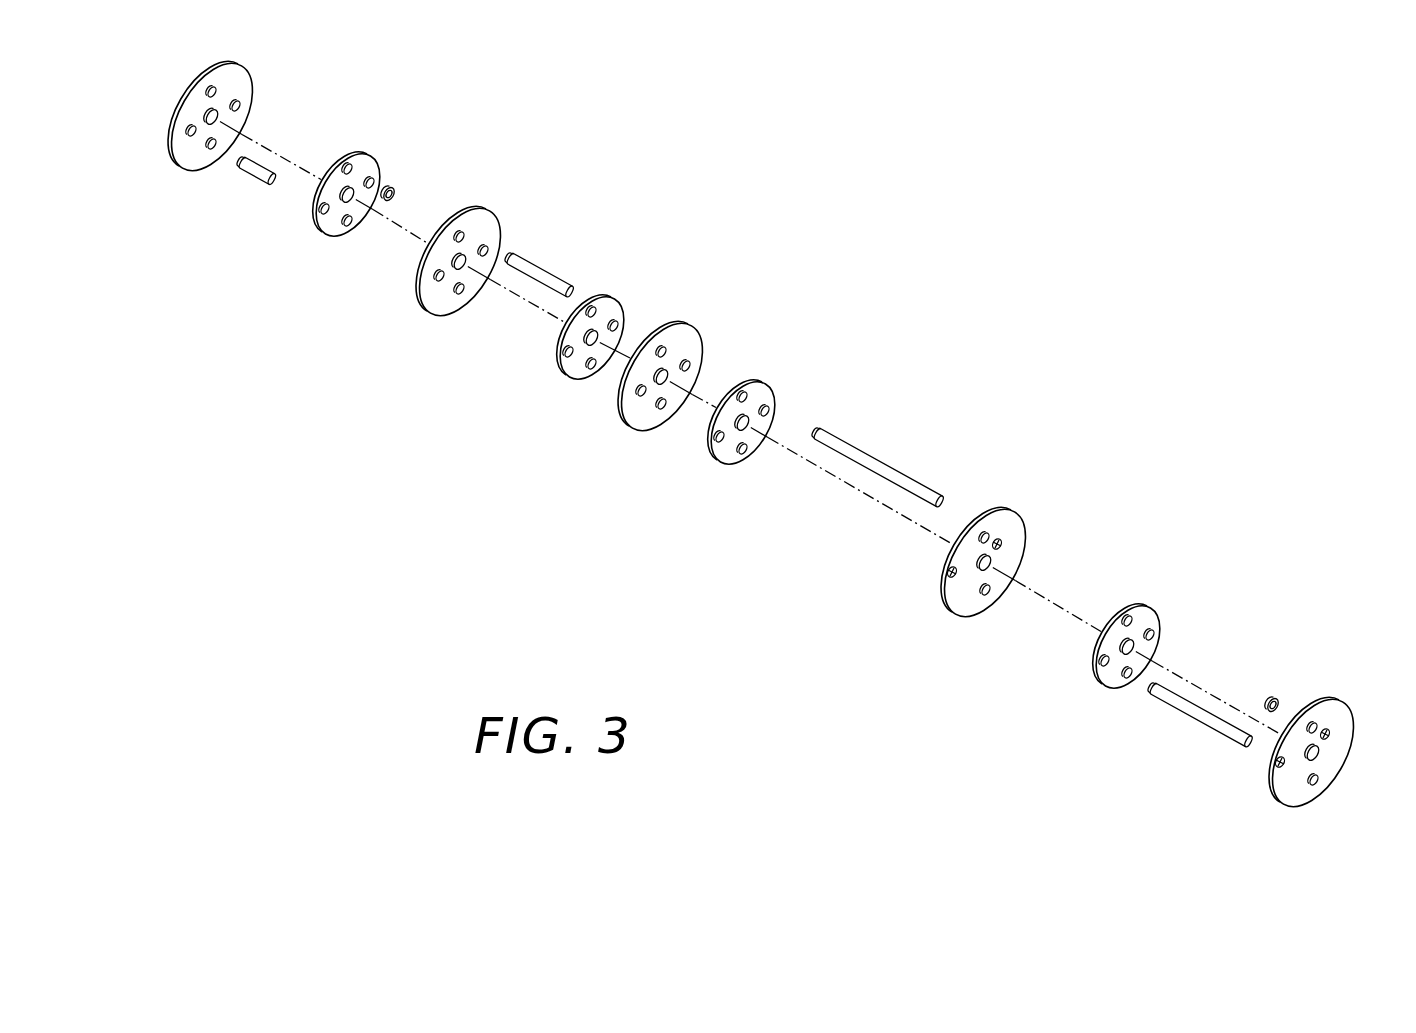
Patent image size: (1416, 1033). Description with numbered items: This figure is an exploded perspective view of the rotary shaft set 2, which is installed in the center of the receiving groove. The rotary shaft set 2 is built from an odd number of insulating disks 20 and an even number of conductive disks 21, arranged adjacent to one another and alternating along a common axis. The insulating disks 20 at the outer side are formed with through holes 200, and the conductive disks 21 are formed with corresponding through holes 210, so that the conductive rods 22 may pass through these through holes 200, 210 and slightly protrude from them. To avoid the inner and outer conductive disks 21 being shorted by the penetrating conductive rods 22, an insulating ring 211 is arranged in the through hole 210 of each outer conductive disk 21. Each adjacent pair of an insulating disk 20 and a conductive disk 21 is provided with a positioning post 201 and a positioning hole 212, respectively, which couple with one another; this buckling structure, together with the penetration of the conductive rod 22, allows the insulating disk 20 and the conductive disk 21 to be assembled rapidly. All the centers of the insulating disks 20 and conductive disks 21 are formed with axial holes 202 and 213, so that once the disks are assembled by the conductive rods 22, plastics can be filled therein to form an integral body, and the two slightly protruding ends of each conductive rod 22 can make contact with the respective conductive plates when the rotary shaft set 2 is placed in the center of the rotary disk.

The rotary shaft set 2 is at (963, 371).
The insulating disk 20 is at (240, 80).
The through hole 200 is at (208, 112).
The positioning post 201 is at (238, 107).
The axial hole 202 is at (462, 268).
The conductive disk 21 is at (363, 158).
The through hole 210 is at (345, 170).
The insulating ring 211 is at (393, 192).
The positioning hole 212 is at (372, 182).
The axial hole 213 is at (350, 203).
The conductive rod 22 is at (253, 175).